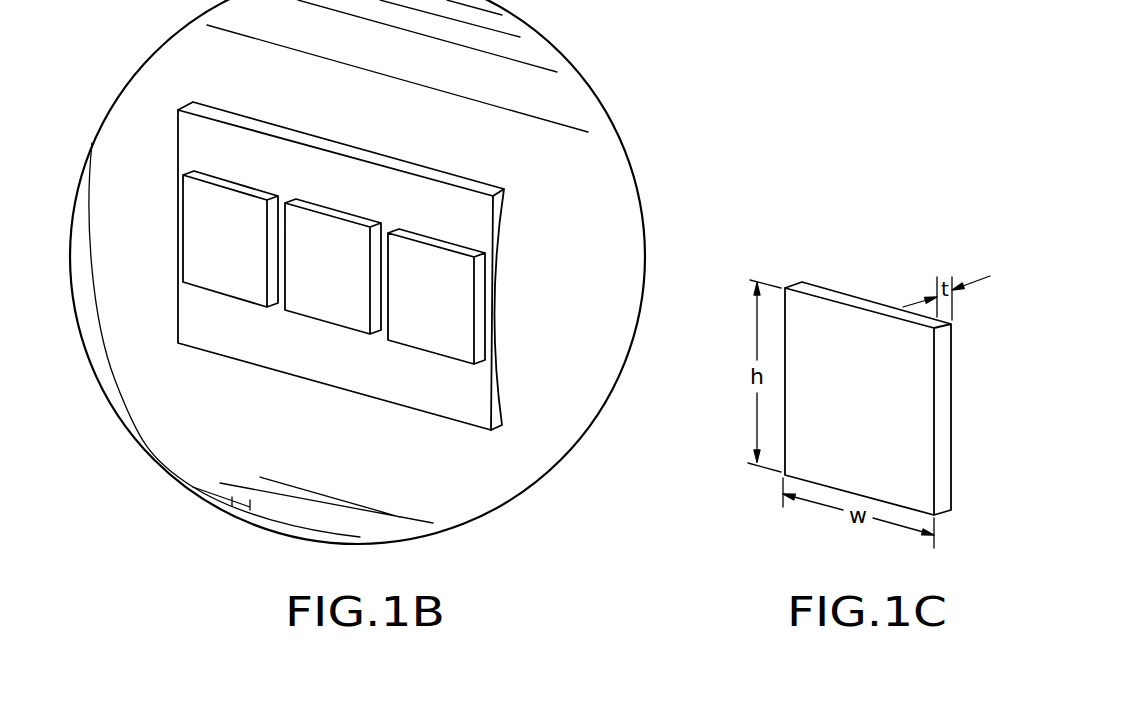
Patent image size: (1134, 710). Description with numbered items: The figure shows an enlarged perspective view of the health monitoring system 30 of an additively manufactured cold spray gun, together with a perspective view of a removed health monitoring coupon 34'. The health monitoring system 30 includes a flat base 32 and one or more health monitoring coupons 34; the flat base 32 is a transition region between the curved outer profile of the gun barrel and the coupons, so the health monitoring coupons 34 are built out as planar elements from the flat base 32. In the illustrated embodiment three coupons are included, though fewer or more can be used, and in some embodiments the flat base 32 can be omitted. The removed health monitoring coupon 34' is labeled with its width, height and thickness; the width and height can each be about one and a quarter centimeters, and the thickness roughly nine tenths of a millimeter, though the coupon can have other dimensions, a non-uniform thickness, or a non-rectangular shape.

In FIG. 1B, the health monitoring system 30 is at (209, 372).
In FIG. 1B, the flat base 32 is at (480, 413).
In FIG. 1B, the health monitoring coupons 34 is at (334, 214).
In FIG. 1C, the health monitoring coupon 34' is at (868, 361).